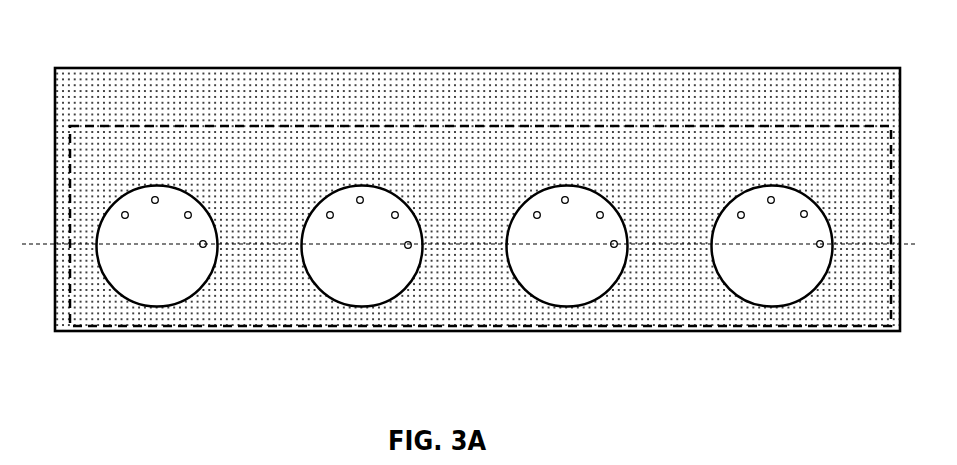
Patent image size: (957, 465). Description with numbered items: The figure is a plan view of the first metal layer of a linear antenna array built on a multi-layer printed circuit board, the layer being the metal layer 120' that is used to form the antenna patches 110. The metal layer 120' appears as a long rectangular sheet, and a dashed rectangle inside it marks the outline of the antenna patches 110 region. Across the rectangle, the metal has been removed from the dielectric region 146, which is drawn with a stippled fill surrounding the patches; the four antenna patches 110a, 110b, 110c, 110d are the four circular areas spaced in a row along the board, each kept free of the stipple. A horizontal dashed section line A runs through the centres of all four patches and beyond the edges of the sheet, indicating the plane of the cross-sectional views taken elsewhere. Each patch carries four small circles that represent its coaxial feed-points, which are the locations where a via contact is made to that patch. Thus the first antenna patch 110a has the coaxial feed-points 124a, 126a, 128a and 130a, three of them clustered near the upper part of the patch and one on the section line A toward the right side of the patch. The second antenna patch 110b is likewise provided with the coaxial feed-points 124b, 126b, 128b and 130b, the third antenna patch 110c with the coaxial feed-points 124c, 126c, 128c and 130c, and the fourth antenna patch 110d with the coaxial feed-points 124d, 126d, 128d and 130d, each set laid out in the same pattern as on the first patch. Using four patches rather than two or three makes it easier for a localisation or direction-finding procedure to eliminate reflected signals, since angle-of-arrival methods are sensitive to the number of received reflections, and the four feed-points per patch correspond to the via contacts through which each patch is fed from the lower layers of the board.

The metal layer 120' is at (469, 203).
The dielectric region 146 is at (298, 108).
The antenna patches 110 is at (463, 125).
The section line A is at (31, 248).
The antenna patch 110a is at (177, 301).
The antenna patch 110b is at (382, 303).
The antenna patch 110c is at (587, 303).
The antenna patch 110d is at (753, 301).
The coaxial feed-point 124a is at (121, 215).
The coaxial feed-point 124b is at (326, 215).
The coaxial feed-point 124c is at (533, 215).
The coaxial feed-point 124d is at (737, 215).
The coaxial feed-point 126a is at (151, 200).
The coaxial feed-point 126b is at (356, 200).
The coaxial feed-point 126c is at (561, 200).
The coaxial feed-point 126d is at (767, 200).
The coaxial feed-point 128a is at (190, 212).
The coaxial feed-point 128b is at (397, 212).
The coaxial feed-point 128c is at (602, 212).
The coaxial feed-point 128d is at (806, 211).
The coaxial feed-point 130a is at (203, 247).
The coaxial feed-point 130b is at (408, 248).
The coaxial feed-point 130c is at (614, 247).
The coaxial feed-point 130d is at (821, 247).